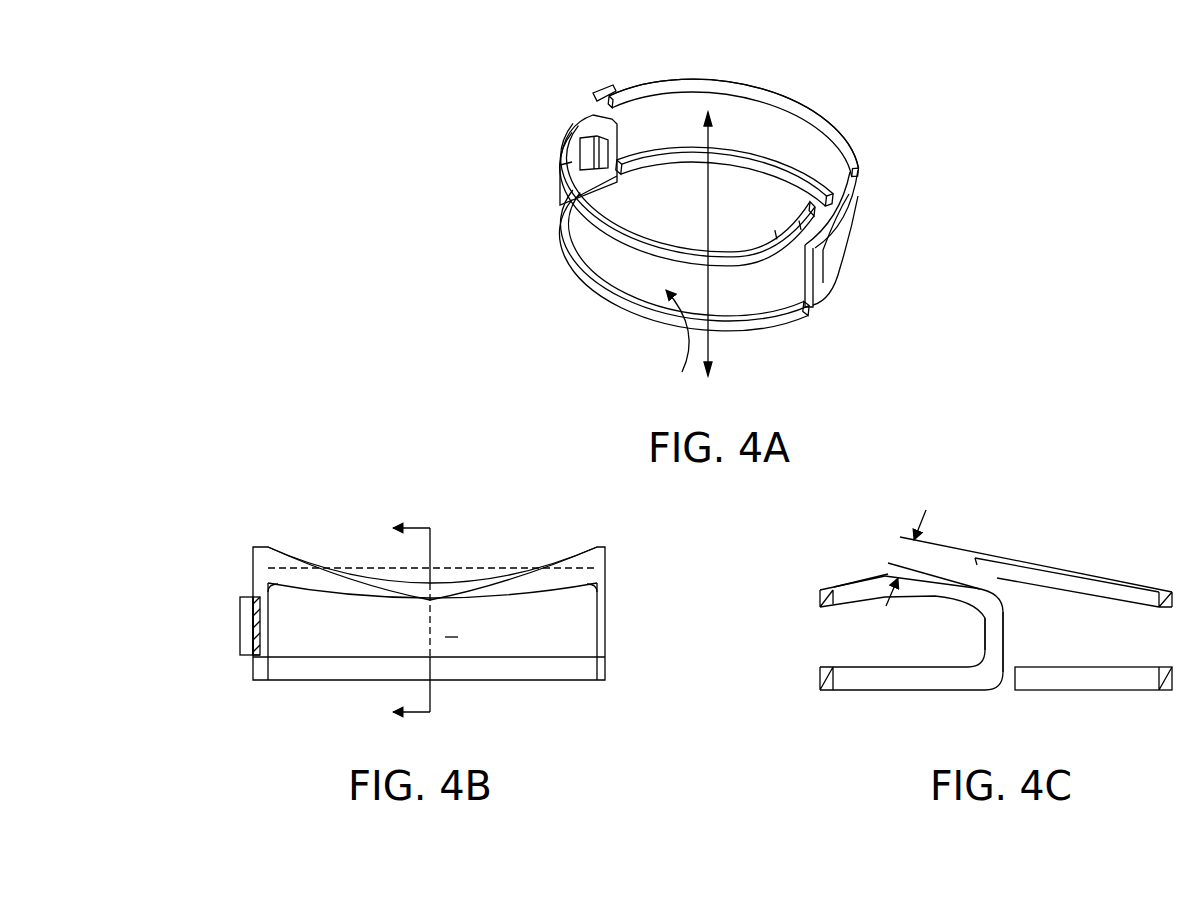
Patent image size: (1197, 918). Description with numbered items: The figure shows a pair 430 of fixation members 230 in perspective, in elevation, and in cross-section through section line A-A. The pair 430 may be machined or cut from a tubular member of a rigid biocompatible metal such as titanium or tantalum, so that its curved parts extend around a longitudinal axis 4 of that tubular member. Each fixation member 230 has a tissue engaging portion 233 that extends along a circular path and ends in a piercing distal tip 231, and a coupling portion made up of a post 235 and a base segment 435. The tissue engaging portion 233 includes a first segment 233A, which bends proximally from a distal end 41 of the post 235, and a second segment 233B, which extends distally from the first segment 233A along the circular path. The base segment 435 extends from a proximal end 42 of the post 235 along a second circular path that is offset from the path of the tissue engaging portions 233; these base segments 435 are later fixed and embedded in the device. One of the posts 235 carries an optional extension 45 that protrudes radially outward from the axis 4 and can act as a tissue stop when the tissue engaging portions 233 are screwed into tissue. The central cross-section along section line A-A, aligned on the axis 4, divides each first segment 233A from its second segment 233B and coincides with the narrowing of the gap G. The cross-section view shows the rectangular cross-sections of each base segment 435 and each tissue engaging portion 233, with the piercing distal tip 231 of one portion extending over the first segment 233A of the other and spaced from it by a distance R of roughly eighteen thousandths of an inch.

In FIG. 4A, the pair of fixation members 430 is at (453, 106).
In FIG. 4B, the pair of fixation members 430 is at (350, 476).
In FIG. 4A, the fixation member 230 is at (894, 118).
In FIG. 4A, the piercing distal tip 231 is at (599, 92).
In FIG. 4C, the piercing distal tip 231 is at (988, 556).
In FIG. 4A, the tissue engaging portion 233 is at (794, 104).
In FIG. 4B, the first segment 233A is at (352, 583).
In FIG. 4C, the first segment 233A is at (858, 596).
In FIG. 4B, the second segment 233B is at (510, 586).
In FIG. 4C, the second segment 233B is at (1054, 578).
In FIG. 4A, the post 235 is at (611, 150).
In FIG. 4B, the post 235 is at (264, 618).
In FIG. 4C, the post 235 is at (986, 648).
In FIG. 4A, the base segment 435 is at (865, 232).
In FIG. 4C, the base segment 435 is at (1035, 678).
In FIG. 4B, the distal end of post 41 is at (258, 576).
In FIG. 4C, the distal end of post 41 is at (996, 598).
In FIG. 4B, the proximal end of post 42 is at (254, 656).
In FIG. 4C, the proximal end of post 42 is at (994, 662).
In FIG. 4B, the extension 45 is at (244, 618).
In FIG. 4A, the longitudinal axis 4 is at (711, 223).
In FIG. 4A, the gap G is at (677, 338).
In FIG. 4B, the gap G is at (451, 628).
In FIG. 4B, the section line A is at (401, 622).
In FIG. 4C, the distance R is at (933, 558).